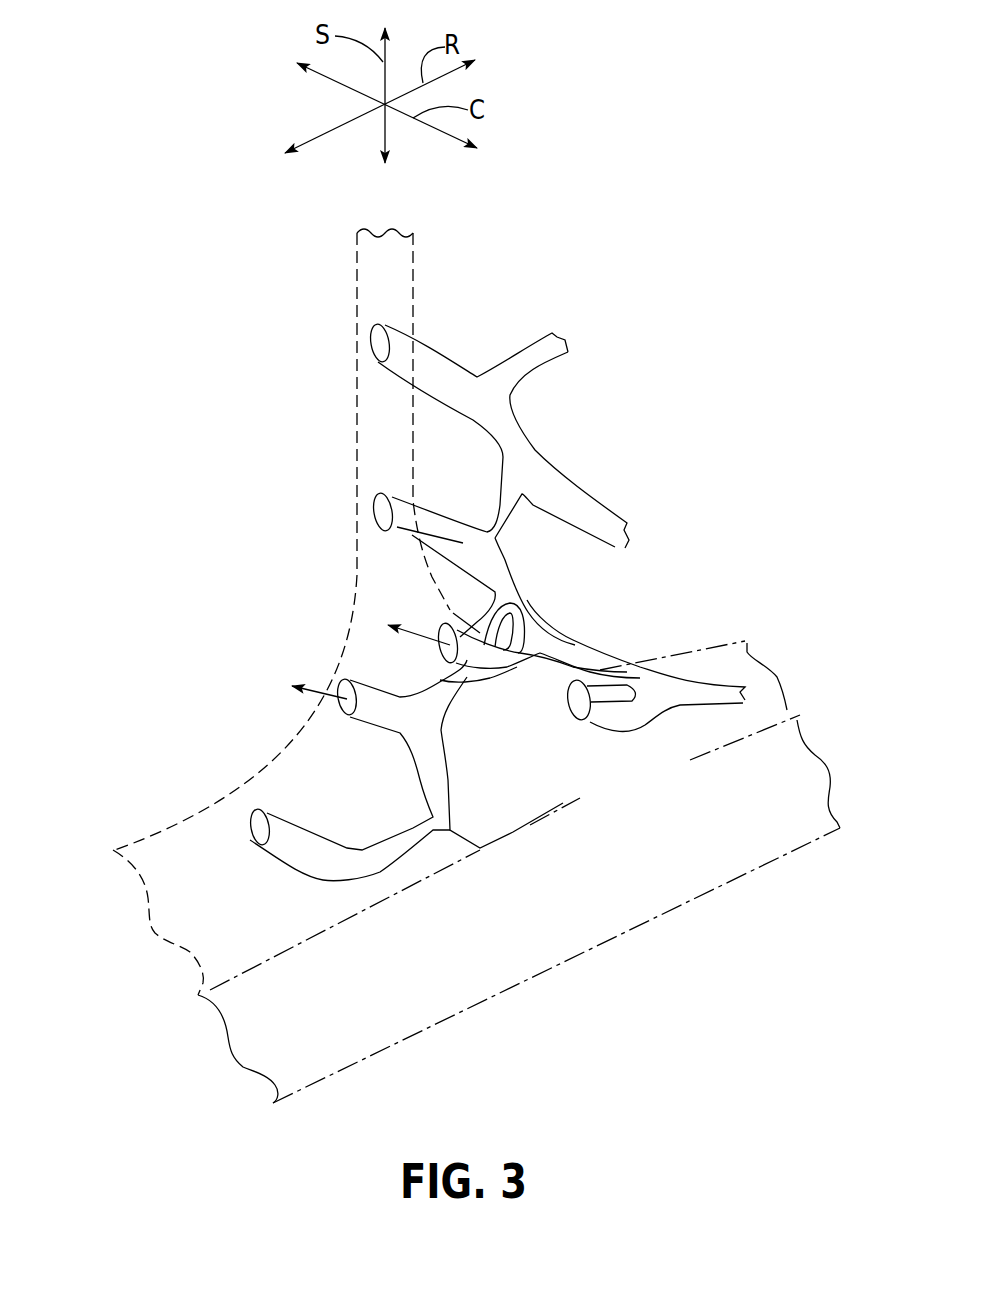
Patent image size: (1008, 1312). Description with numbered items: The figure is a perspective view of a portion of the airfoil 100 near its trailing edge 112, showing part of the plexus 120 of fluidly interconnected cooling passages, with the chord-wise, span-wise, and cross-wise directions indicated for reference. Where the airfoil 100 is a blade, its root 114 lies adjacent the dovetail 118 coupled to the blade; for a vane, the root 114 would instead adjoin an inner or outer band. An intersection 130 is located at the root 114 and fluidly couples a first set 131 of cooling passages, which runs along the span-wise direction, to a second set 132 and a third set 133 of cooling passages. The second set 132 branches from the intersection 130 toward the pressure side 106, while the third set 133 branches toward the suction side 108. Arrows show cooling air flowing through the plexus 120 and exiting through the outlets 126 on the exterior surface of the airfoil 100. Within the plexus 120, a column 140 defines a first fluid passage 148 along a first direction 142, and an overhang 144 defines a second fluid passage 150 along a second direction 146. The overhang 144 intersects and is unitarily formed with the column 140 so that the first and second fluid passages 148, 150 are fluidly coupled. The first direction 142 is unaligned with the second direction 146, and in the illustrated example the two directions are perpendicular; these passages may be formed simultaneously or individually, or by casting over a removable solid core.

The airfoil 100 is at (167, 813).
The pressure side 106 is at (418, 95).
The suction side 108 is at (242, 156).
The trailing edge 112 is at (373, 388).
The root 114 is at (300, 775).
The dovetail 118 is at (773, 787).
The plexus 120 is at (476, 558).
The outlets 126 is at (380, 343).
The intersection 130 is at (543, 607).
The first set of cooling passages 131 is at (610, 490).
The second set of cooling passages 132 is at (567, 735).
The third set of cooling passages 133 is at (457, 770).
The column 140 is at (500, 505).
The first direction 142 is at (517, 520).
The overhang 144 is at (410, 527).
The second direction 146 is at (413, 525).
The first fluid passage 148 is at (498, 530).
The second fluid passage 150 is at (390, 512).